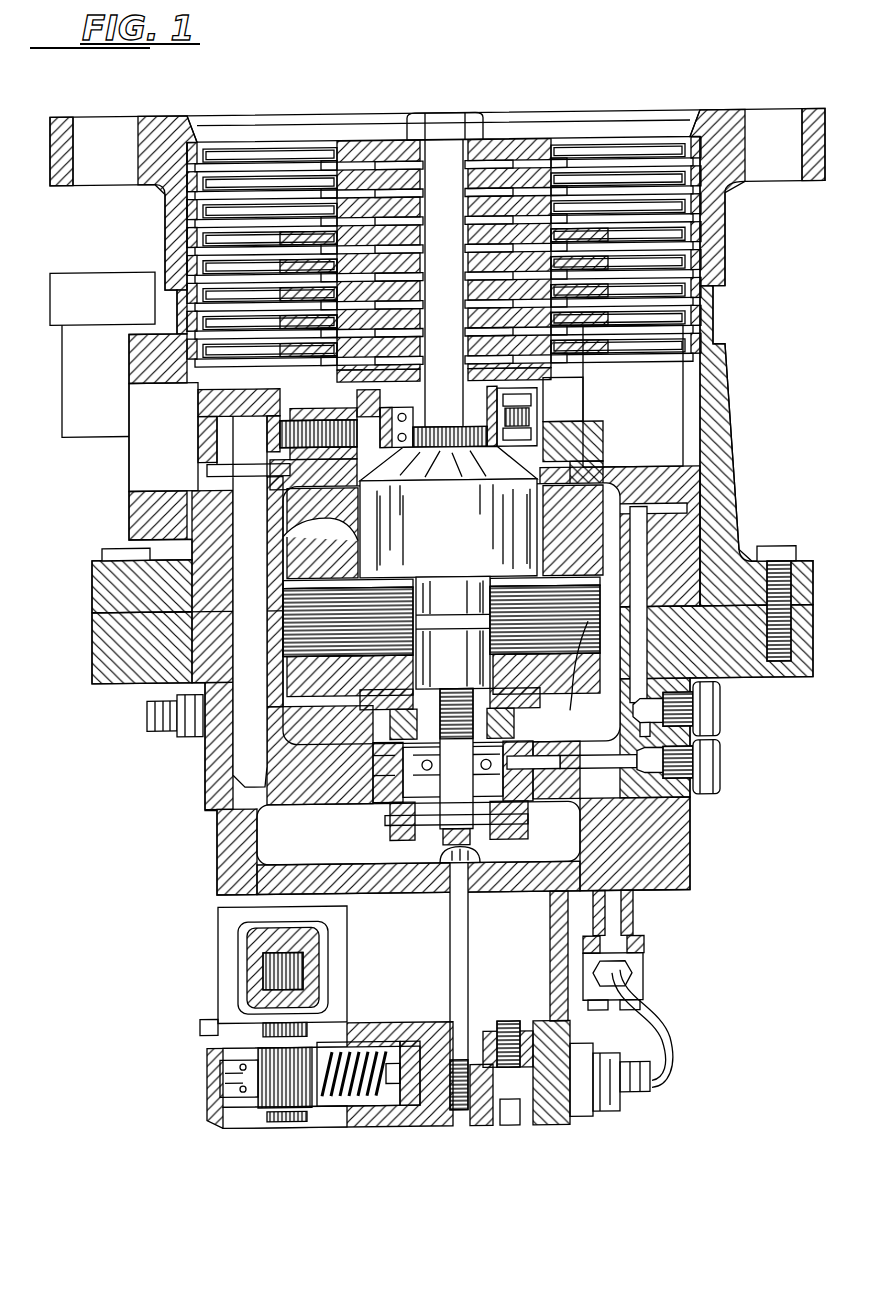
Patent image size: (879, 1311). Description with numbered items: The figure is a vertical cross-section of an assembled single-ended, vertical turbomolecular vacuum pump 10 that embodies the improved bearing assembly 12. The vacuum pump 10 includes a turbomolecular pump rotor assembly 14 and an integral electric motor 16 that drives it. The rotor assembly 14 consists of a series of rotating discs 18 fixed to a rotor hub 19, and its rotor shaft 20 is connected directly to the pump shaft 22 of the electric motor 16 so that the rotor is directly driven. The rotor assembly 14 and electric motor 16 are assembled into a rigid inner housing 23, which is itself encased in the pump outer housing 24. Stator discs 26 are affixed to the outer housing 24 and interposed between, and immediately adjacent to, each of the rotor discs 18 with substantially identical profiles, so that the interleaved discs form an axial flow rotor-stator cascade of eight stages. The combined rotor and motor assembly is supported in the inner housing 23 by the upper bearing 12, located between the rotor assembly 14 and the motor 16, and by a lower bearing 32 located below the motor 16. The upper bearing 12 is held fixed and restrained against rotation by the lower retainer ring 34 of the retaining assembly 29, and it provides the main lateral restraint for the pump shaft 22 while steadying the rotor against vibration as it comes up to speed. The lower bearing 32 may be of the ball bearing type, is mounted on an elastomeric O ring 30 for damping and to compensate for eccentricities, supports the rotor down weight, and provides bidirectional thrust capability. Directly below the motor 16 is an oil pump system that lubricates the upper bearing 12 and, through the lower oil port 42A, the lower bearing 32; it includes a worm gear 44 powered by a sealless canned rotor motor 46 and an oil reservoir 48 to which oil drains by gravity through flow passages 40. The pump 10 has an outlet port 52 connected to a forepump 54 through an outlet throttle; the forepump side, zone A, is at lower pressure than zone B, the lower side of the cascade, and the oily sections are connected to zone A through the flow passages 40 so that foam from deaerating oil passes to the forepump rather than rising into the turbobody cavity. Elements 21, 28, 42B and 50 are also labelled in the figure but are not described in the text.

The vacuum pump 10 is at (84, 646).
The bearing assembly 12 is at (383, 422).
The turbomolecular pump rotor assembly 14 is at (356, 140).
The electric motor 16 is at (588, 630).
The rotating discs 18 is at (542, 195).
The rotor hub 19 is at (527, 381).
The rotor shaft 20 is at (457, 277).
The shaft nut 21 is at (484, 121).
The pump shaft 22 is at (462, 616).
The inner housing 23 is at (678, 481).
The pump outer housing 24 is at (168, 131).
The stator discs 26 is at (696, 267).
The upper bearing 28 is at (333, 419).
The retaining assembly 29 is at (540, 414).
The elastomeric O ring 30 is at (402, 791).
The lower bearing 32 is at (392, 762).
The lower retainer ring 34 is at (383, 420).
The flow passages 40 is at (722, 1081).
The lower oil port 42A is at (588, 439).
The lower lubricant chamber 42B is at (518, 781).
The worm gear 44 is at (361, 1090).
The canned rotor motor 46 is at (283, 1090).
The oil reservoir 48 is at (385, 920).
The drive shaft 50 is at (248, 751).
The outlet port 52 is at (128, 460).
The forepump 54 is at (103, 310).
The zone A is at (101, 401).
The zone B is at (247, 402).